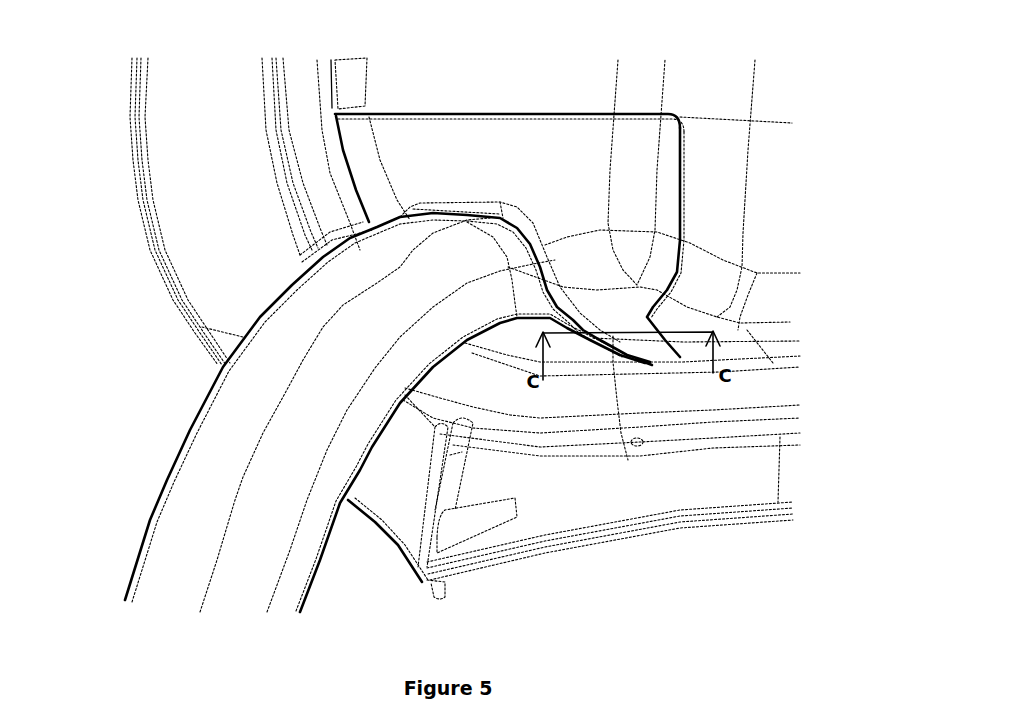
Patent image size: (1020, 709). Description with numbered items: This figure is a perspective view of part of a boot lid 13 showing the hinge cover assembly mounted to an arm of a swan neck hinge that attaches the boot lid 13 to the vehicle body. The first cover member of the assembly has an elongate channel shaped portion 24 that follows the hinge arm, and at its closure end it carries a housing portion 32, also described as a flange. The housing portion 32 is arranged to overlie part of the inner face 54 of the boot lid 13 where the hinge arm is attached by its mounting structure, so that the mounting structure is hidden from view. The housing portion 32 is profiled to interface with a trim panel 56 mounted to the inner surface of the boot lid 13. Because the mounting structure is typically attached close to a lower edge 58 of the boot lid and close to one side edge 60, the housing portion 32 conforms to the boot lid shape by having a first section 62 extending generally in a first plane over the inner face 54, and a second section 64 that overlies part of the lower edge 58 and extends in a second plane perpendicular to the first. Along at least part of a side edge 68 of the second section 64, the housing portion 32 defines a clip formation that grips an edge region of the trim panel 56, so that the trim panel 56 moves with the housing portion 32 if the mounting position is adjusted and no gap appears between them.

The boot lid 13 is at (197, 177).
The elongate channel shaped portion 24 is at (227, 403).
The housing portion 32 is at (397, 145).
The inner face 54 is at (737, 390).
The trim panel 56 is at (770, 158).
The lower edge 58 is at (705, 420).
The side edge 60 is at (275, 107).
The first section 62 is at (578, 135).
The second section 64 is at (643, 362).
The side edge 68 is at (648, 317).